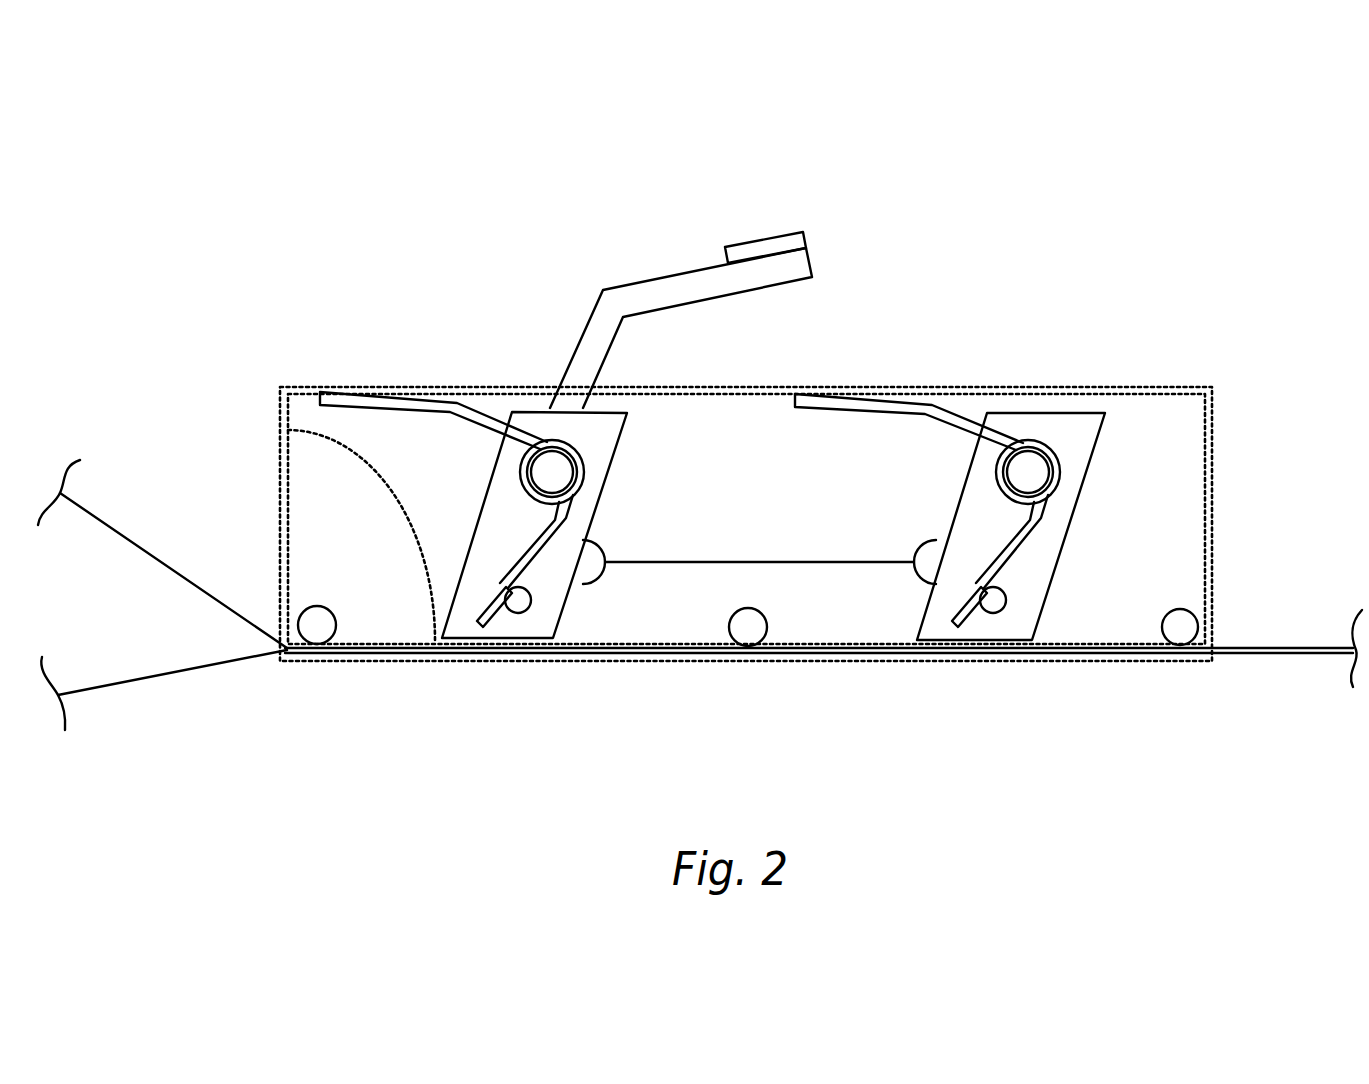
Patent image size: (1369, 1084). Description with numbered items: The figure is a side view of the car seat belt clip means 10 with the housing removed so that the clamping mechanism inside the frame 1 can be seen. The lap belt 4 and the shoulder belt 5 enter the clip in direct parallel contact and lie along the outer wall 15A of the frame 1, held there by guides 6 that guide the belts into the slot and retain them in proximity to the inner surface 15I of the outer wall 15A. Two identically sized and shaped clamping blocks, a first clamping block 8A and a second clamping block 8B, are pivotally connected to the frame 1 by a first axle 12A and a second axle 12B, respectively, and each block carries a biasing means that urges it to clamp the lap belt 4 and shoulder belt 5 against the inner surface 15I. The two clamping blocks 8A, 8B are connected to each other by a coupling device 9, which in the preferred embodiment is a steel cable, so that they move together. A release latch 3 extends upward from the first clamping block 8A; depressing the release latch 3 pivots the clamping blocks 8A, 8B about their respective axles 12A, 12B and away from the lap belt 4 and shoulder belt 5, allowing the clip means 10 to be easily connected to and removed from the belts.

The frame 1 is at (1160, 386).
The release latch 3 is at (758, 238).
The lap belt 4 is at (157, 678).
The shoulder belt 5 is at (177, 568).
The guides 6 is at (317, 634).
The first clamping block 8A is at (563, 607).
The second clamping block 8B is at (1047, 593).
The coupling device 9 is at (842, 563).
The clip means 10 is at (1037, 216).
The first axle 12A is at (552, 468).
The second axle 12B is at (1028, 468).
The outer wall 15A is at (500, 661).
The inner surface 15I is at (288, 430).